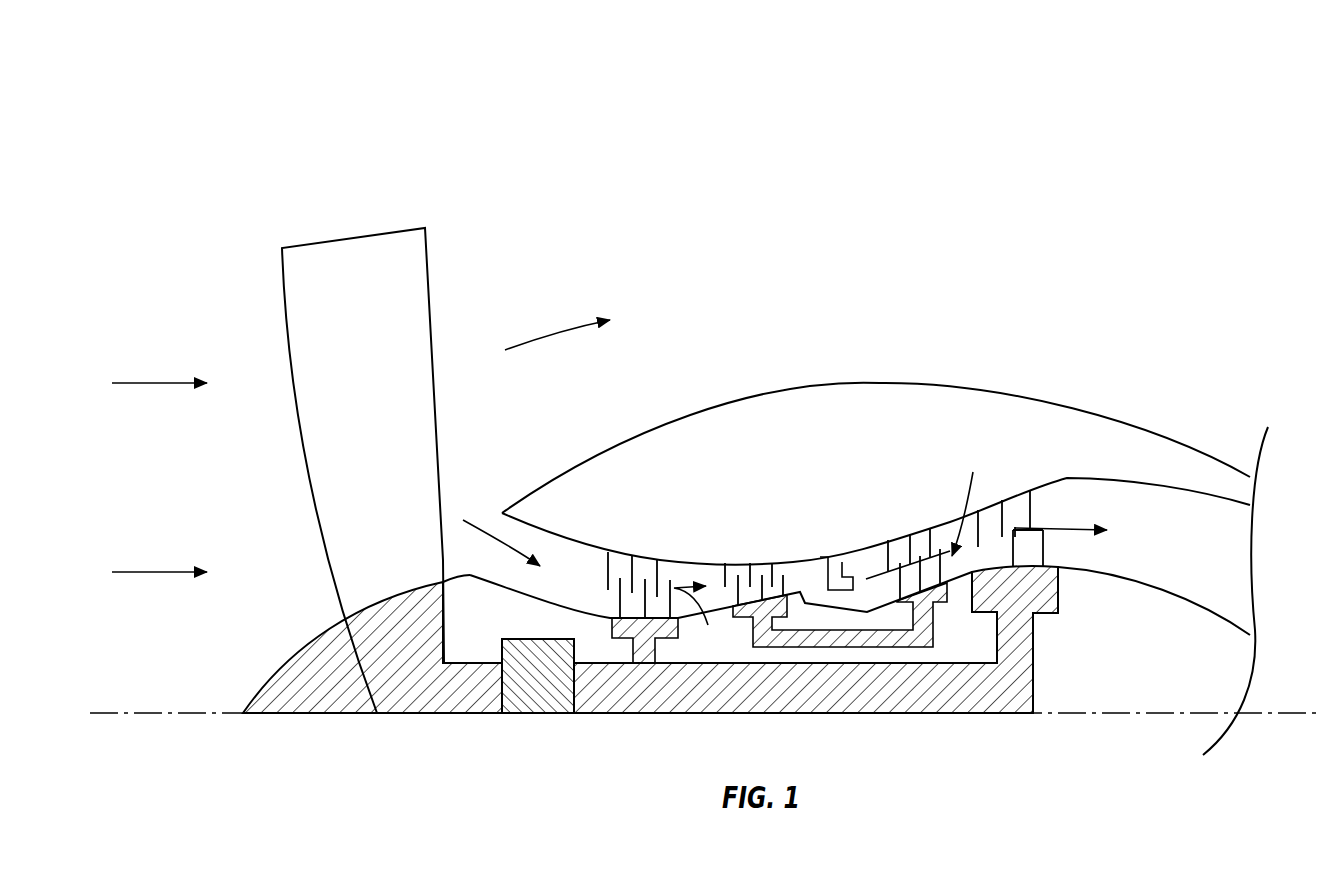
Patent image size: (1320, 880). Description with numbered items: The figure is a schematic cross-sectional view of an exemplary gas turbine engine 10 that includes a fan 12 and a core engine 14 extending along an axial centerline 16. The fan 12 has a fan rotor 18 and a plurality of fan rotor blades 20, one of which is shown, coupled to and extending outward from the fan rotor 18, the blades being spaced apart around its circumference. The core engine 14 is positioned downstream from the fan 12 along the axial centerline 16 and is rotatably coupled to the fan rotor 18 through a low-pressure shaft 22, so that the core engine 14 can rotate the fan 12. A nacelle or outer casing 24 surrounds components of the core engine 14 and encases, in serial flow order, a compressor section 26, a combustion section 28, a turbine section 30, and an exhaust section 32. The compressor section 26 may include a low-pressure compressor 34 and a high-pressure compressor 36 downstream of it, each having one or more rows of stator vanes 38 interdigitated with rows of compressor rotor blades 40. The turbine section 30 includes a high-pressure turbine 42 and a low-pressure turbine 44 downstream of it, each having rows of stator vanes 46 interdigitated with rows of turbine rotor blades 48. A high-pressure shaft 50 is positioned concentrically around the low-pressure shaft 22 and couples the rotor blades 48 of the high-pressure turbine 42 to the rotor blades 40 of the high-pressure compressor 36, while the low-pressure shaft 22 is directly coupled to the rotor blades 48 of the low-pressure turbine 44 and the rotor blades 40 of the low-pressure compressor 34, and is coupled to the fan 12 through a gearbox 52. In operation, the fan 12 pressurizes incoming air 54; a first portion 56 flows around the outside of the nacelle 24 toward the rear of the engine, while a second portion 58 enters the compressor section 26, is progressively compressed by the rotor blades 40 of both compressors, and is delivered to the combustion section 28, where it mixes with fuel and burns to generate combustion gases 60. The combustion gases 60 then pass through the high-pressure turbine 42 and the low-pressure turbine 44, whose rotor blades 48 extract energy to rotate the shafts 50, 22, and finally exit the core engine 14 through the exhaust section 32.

The engine 10 is at (255, 95).
The fan 12 is at (287, 183).
The core engine 14 is at (866, 358).
The axial centerline 16 is at (207, 713).
The fan rotor 18 is at (424, 693).
The fan rotor blades 20 is at (283, 278).
The low-pressure (LP) shaft 22 is at (720, 690).
The nacelle or outer casing 24 is at (687, 415).
The compressor section 26 is at (690, 527).
The combustion section 28 is at (826, 537).
The turbine section 30 is at (937, 497).
The exhaust section 32 is at (1204, 548).
The low-pressure (LP) compressor 34 is at (628, 538).
The high-pressure (HP) compressor 36 is at (760, 538).
The stator vanes 38 is at (608, 570).
The compressor rotor blades 40 is at (620, 600).
The high-pressure (HP) turbine 42 is at (897, 527).
The low-pressure (LP) turbine 44 is at (1021, 478).
The stator vanes 46 is at (888, 562).
The turbine rotor blades 48 is at (1045, 547).
The high pressure (HP) shaft 50 is at (895, 647).
The gearbox 52 is at (545, 690).
The incoming air 54 is at (148, 384).
The first portion of the pressurized air 56 is at (545, 334).
The second portion of the air 58 is at (483, 538).
The combustion gases 60 is at (1118, 503).